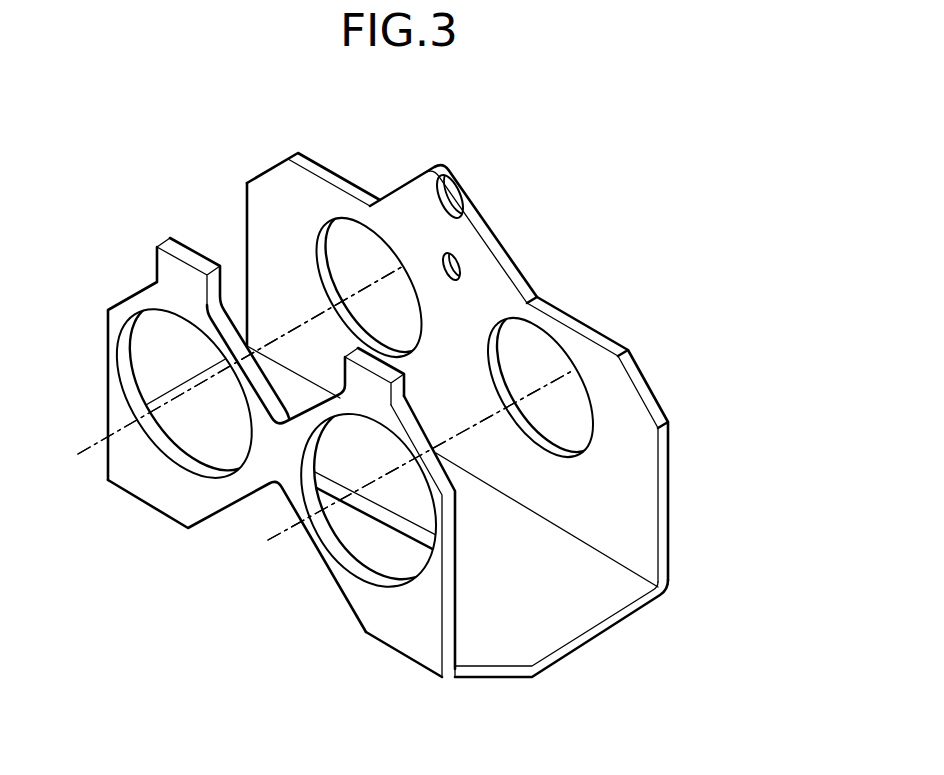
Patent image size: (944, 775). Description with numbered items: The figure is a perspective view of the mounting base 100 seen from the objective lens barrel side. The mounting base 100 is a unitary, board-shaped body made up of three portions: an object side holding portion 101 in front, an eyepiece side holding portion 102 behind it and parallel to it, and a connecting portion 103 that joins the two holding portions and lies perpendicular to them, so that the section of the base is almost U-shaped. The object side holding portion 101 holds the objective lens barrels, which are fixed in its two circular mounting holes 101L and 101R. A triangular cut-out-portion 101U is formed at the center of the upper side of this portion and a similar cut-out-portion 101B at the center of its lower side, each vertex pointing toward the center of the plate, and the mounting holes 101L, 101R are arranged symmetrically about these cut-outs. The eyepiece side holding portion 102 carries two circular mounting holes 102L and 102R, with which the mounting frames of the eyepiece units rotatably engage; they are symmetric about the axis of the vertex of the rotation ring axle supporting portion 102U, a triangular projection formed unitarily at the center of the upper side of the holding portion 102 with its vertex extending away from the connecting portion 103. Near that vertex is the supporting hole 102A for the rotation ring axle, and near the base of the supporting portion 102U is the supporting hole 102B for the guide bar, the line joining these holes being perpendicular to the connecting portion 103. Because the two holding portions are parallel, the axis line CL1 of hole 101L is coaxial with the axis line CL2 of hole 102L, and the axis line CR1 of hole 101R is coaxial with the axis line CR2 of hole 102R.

The mounting base 100 is at (648, 291).
The object side holding portion 101 is at (448, 633).
The mounting hole 101R is at (222, 448).
The mounting hole 101L is at (412, 512).
The cut-out-portion 101U is at (289, 384).
The cut-out-portion 101B is at (239, 520).
The eyepiece side holding portion 102 is at (680, 500).
The mounting hole 102R is at (348, 228).
The mounting hole 102L is at (567, 403).
The supporting hole 102A is at (463, 198).
The supporting hole 102B is at (463, 272).
The rotation ring axle supporting portion 102U is at (493, 258).
The connecting portion 103 is at (574, 618).
The axis line CR1 is at (90, 449).
The axis line CR2 is at (241, 359).
The axis line CL1 is at (293, 537).
The axis line CL2 is at (420, 455).